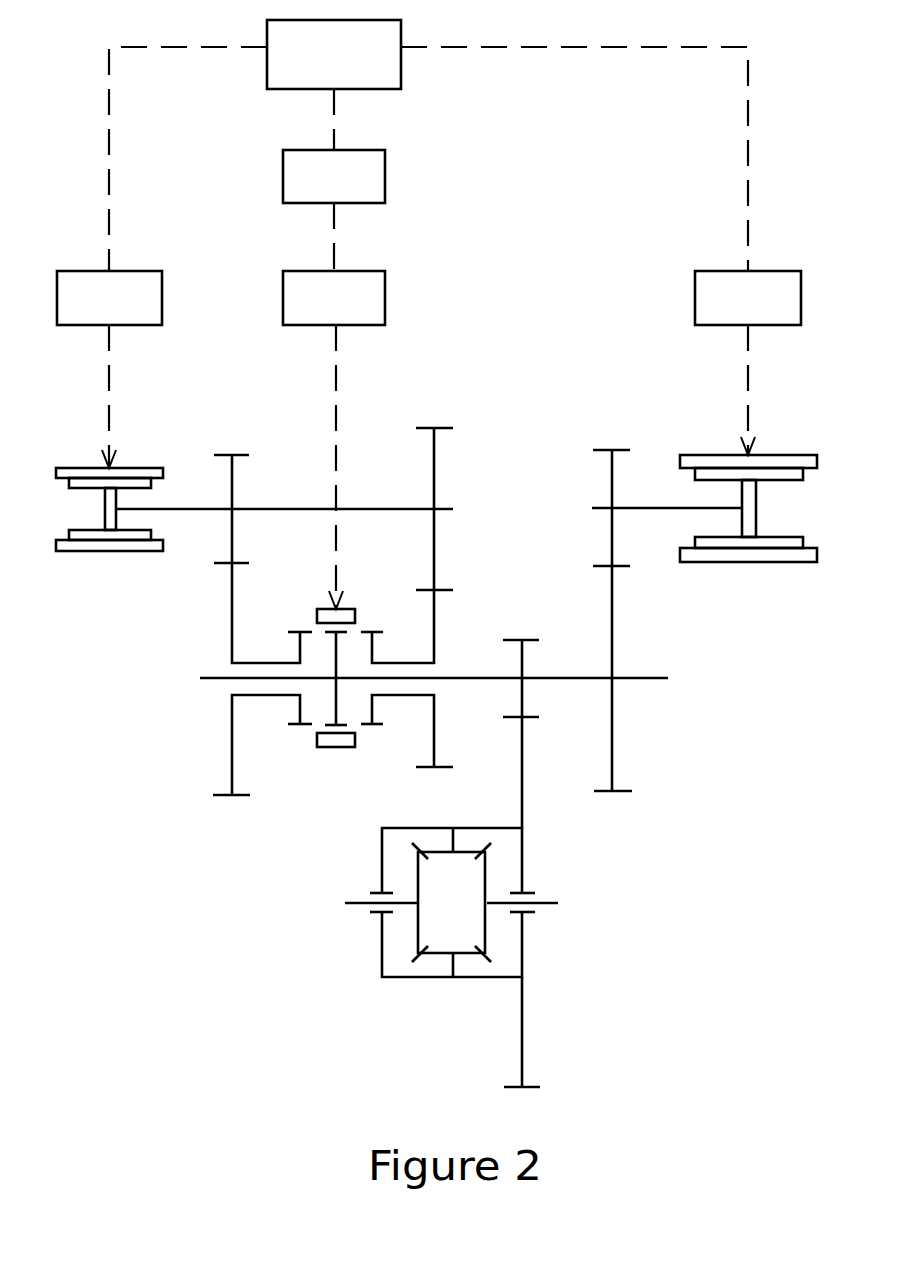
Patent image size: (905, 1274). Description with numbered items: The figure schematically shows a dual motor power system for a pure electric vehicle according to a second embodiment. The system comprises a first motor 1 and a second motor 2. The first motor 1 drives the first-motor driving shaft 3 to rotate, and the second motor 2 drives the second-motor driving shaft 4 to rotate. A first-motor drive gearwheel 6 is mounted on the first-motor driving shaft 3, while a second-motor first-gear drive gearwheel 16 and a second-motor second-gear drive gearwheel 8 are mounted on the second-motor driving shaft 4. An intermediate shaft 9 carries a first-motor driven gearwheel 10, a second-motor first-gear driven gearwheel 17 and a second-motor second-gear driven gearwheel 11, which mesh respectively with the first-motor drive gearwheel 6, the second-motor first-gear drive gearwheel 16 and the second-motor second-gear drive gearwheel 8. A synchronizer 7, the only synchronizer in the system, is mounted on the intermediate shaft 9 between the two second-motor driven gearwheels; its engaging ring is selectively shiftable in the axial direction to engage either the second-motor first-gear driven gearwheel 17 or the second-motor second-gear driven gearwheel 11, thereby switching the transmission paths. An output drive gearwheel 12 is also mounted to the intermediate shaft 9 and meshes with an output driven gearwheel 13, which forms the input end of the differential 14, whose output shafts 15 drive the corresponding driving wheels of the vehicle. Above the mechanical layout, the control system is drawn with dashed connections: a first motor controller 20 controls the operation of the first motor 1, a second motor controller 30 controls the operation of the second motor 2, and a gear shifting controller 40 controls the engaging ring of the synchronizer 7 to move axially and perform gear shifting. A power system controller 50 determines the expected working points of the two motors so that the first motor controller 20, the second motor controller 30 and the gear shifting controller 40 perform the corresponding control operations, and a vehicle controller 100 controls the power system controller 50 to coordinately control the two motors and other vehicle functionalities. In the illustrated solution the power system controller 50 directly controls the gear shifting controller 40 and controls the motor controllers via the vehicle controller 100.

The vehicle controller 100 is at (334, 54).
The power system controller 50 is at (334, 176).
The gear shifting controller 40 is at (334, 298).
The second motor controller 30 is at (109, 298).
The first motor controller 20 is at (748, 298).
The first motor 1 is at (797, 453).
The second motor 2 is at (68, 467).
The first-motor driving shaft 3 is at (667, 512).
The second-motor driving shaft 4 is at (196, 512).
The first-motor drive gearwheel 6 is at (605, 448).
The synchronizer 7 is at (307, 600).
The second-motor second-gear drive gearwheel 8 is at (425, 425).
The intermediate shaft 9 is at (648, 682).
The first-motor driven gearwheel 10 is at (612, 612).
The second-motor second-gear driven gearwheel 11 is at (435, 725).
The output drive gearwheel 12 is at (520, 659).
The output driven gearwheel 13 is at (522, 757).
The differential 14 is at (382, 860).
The output shafts 15 is at (548, 904).
The second-motor first-gear drive gearwheel 16 is at (222, 450).
The second-motor first-gear driven gearwheel 17 is at (232, 723).